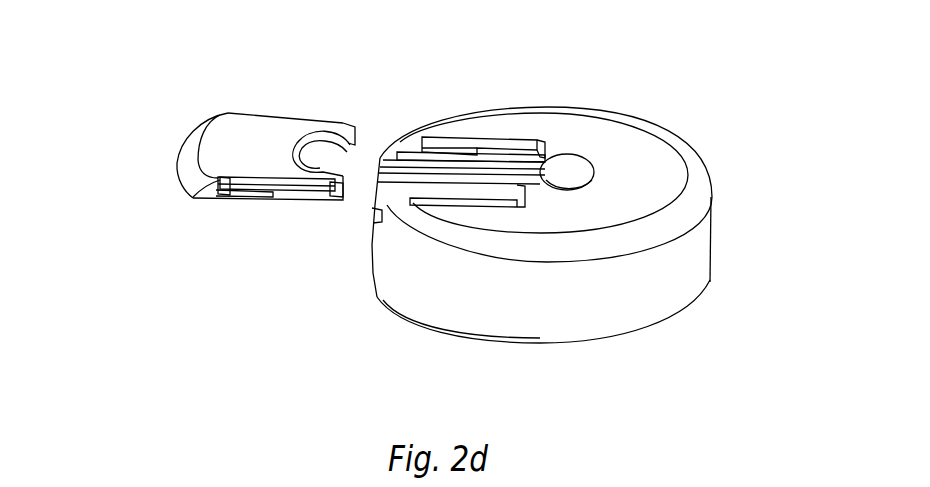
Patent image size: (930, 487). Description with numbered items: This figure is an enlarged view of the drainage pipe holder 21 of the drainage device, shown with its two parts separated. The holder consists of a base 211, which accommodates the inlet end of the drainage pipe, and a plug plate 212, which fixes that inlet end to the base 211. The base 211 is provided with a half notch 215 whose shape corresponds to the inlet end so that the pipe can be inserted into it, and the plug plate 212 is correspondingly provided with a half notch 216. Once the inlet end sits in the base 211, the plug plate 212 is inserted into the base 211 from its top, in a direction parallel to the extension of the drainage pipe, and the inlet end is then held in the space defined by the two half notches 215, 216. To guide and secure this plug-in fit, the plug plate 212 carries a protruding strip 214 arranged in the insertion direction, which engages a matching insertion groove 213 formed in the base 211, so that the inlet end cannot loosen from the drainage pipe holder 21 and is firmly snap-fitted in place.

The drainage pipe holder 21 is at (282, 71).
The base 211 is at (650, 288).
The plug plate 212 is at (218, 144).
The insertion groove 213 is at (453, 145).
The protruding strip 214 is at (240, 193).
The half notch 215 is at (570, 176).
The half notch 216 is at (320, 163).